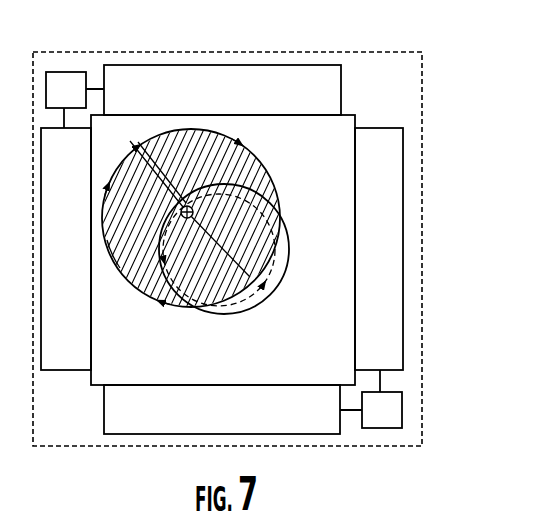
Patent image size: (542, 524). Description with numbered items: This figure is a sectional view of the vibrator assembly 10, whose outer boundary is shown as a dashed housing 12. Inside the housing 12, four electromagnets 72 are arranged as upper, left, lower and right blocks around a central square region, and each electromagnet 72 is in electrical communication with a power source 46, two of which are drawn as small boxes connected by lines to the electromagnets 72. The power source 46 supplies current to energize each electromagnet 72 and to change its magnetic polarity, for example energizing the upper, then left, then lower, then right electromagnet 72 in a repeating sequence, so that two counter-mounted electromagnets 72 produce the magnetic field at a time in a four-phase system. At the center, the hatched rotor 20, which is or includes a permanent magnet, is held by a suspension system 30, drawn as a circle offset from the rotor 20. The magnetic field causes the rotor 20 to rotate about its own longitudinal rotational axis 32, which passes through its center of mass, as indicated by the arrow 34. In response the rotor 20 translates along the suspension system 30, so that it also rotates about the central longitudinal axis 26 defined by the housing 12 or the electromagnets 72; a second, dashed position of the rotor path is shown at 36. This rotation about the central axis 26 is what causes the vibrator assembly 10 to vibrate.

The vibrator assembly 10 is at (449, 50).
The housing 12 is at (422, 117).
The rotor 20 is at (258, 139).
The central longitudinal axis 26 is at (226, 247).
The suspension system 30 is at (280, 300).
The longitudinal rotational axis 32 is at (131, 143).
The arrow 34 is at (125, 272).
The phantom position circle 36 is at (191, 297).
The power source 46 is at (392, 422).
The electromagnet 72 is at (222, 422).